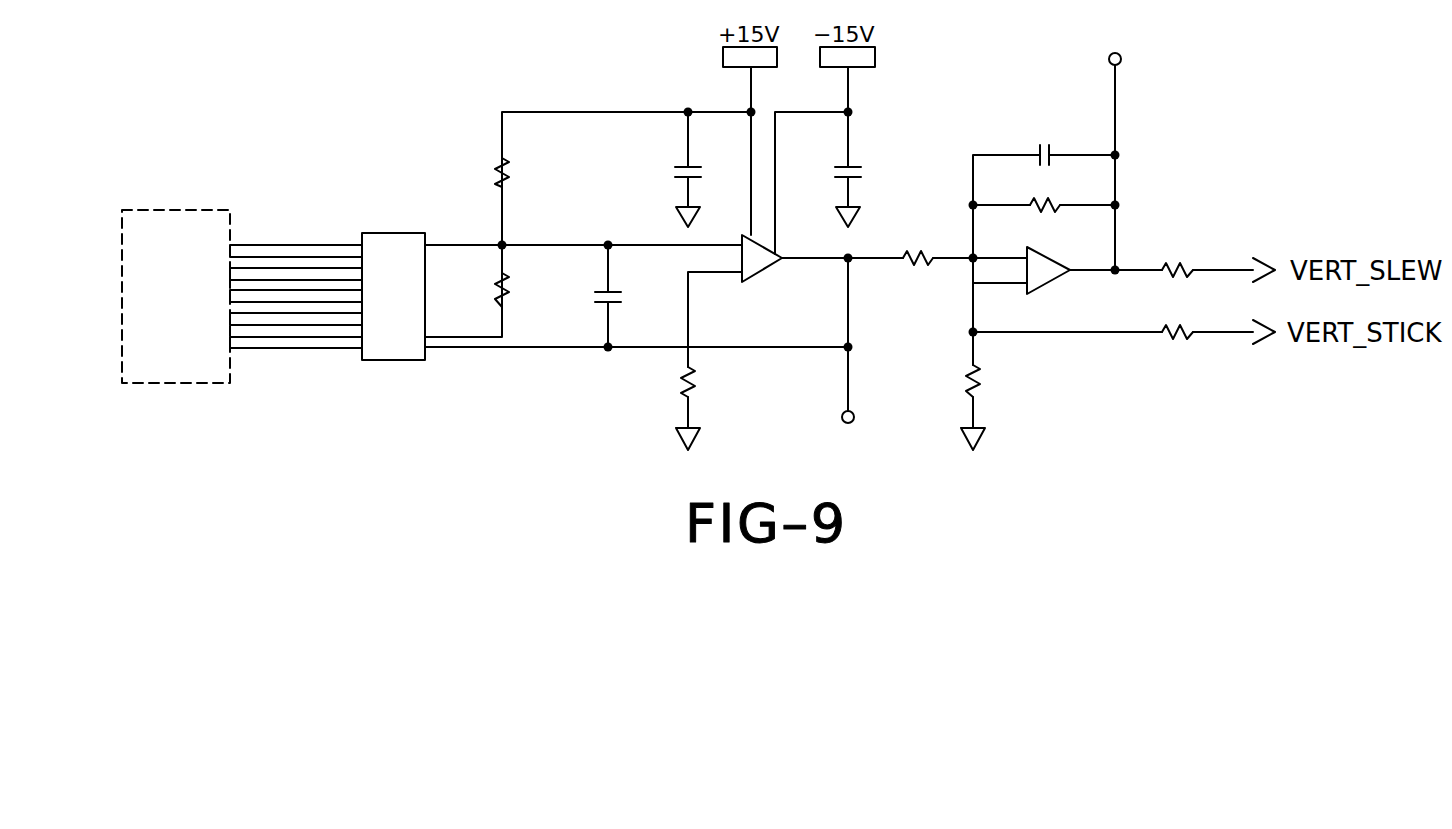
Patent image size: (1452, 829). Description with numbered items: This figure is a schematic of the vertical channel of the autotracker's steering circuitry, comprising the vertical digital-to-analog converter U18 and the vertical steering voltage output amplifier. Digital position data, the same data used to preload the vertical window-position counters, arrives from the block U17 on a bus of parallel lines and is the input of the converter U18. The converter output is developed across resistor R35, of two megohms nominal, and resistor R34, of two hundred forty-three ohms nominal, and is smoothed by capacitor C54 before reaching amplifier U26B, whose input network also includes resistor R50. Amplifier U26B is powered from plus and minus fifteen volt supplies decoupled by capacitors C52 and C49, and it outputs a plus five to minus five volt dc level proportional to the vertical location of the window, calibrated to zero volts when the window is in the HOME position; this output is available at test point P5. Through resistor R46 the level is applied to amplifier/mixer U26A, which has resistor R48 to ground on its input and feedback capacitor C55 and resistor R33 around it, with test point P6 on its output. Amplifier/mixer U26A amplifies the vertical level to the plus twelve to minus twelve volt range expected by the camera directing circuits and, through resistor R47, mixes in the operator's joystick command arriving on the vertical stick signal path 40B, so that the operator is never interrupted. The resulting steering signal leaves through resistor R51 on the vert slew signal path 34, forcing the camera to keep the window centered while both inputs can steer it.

The signal path vert slew 34 is at (1222, 270).
The signal path vertical stick 40B is at (1222, 332).
The element U17 is at (176, 296).
The vertical digital-to-analog converter U18 is at (393, 283).
The resistor R35 is at (623, 178).
The resistor R34 is at (531, 307).
The capacitor C52 is at (661, 169).
The capacitor C49 is at (823, 182).
The vertical steering voltage output amplifier U26B is at (763, 256).
The resistor R50 is at (660, 408).
The capacitor C54 is at (636, 296).
The resistor R46 is at (918, 259).
The test point P5 is at (848, 434).
The capacitor C55 is at (1017, 155).
The resistor R33 is at (1066, 207).
The test point P6 is at (1107, 44).
The amplifier/mixer U26A is at (1062, 283).
The resistor R48 is at (945, 406).
The resistor R51 is at (1176, 244).
The resistor R47 is at (1172, 359).